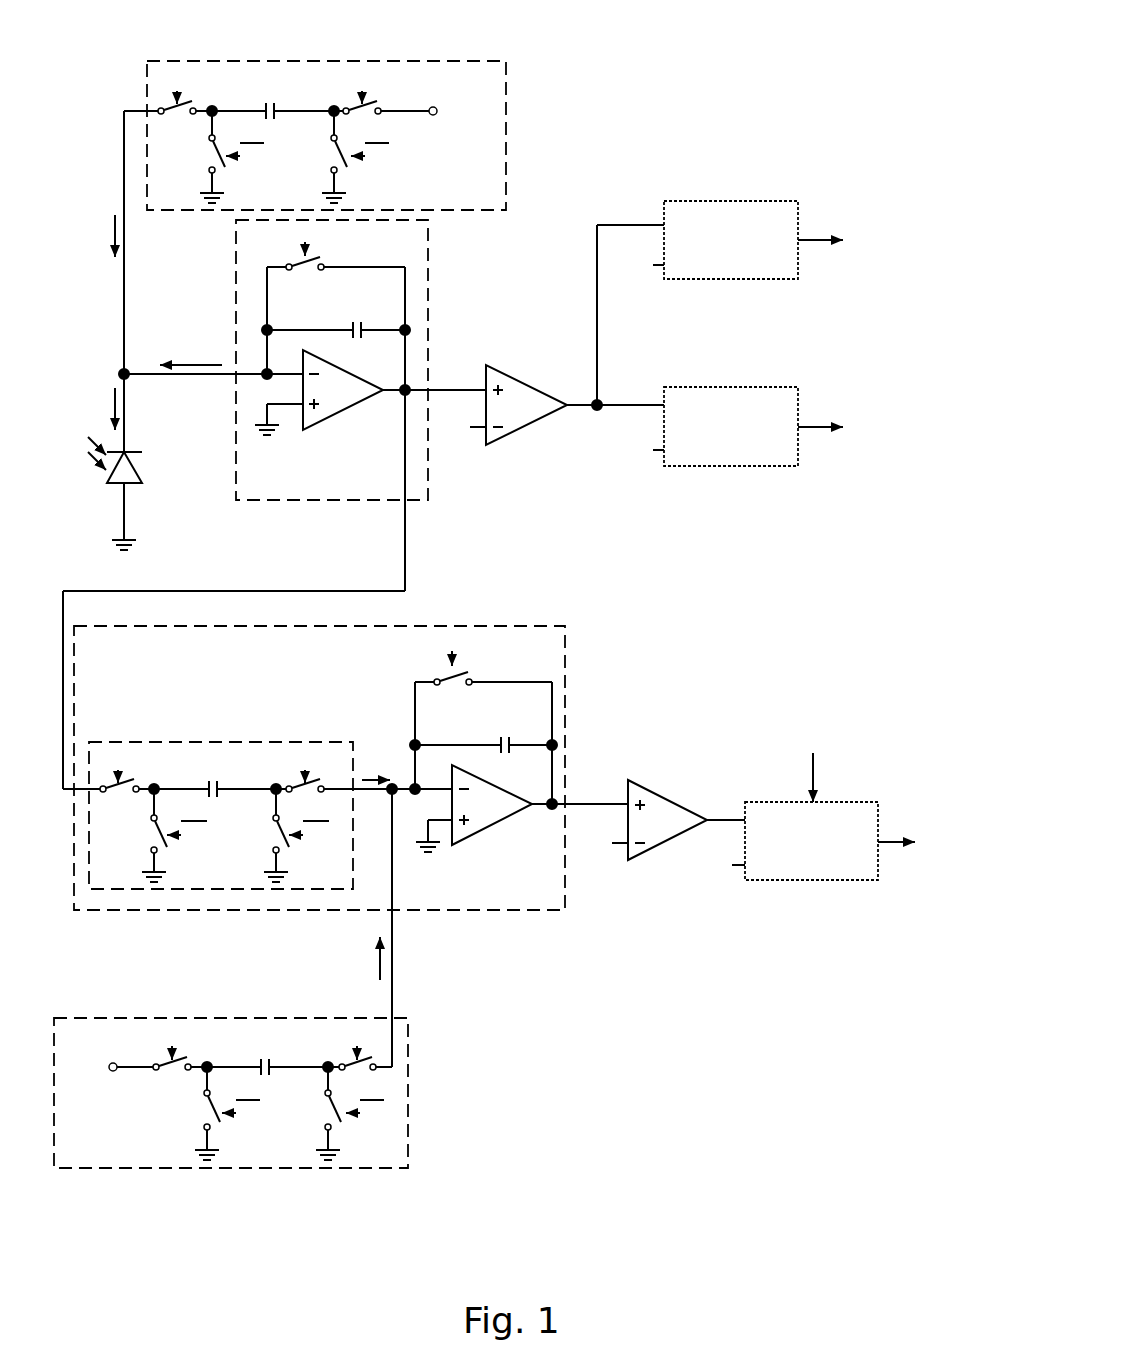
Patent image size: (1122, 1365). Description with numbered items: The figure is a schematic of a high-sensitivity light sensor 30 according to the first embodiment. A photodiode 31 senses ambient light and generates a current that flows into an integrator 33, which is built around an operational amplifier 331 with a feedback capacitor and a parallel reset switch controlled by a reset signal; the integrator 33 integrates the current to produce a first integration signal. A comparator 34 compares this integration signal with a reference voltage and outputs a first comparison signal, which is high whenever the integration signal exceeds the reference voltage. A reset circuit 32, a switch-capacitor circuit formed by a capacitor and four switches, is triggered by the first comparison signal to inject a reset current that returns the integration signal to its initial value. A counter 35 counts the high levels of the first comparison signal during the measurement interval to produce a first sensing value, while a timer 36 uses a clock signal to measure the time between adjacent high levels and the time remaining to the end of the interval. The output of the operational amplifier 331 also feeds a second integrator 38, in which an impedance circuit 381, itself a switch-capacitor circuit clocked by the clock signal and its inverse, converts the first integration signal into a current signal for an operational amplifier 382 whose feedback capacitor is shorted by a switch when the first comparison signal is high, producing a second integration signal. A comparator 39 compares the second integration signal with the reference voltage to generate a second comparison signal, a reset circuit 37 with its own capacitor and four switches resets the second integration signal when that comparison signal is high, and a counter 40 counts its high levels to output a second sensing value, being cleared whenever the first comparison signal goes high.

The light sensor 30 is at (842, 70).
The photodiode 31 is at (132, 474).
The reset circuit 32 is at (506, 135).
The integrator 33 is at (428, 275).
The operational amplifier 331 is at (338, 402).
The comparator 34 is at (522, 388).
The counter 35 is at (757, 387).
The timer 36 is at (755, 201).
The reset circuit 37 is at (408, 1097).
The integrator 38 is at (527, 625).
The impedance circuit 381 is at (212, 742).
The operational amplifier 382 is at (487, 815).
The comparator 39 is at (660, 805).
The counter 40 is at (812, 880).